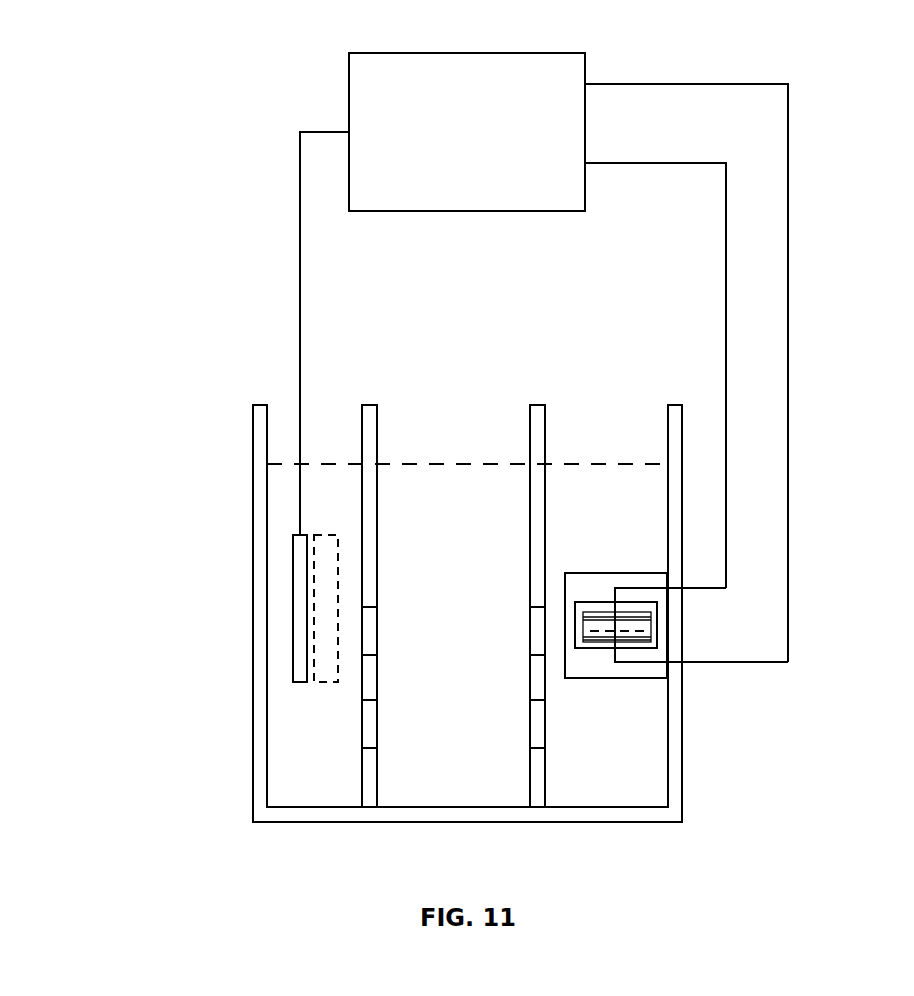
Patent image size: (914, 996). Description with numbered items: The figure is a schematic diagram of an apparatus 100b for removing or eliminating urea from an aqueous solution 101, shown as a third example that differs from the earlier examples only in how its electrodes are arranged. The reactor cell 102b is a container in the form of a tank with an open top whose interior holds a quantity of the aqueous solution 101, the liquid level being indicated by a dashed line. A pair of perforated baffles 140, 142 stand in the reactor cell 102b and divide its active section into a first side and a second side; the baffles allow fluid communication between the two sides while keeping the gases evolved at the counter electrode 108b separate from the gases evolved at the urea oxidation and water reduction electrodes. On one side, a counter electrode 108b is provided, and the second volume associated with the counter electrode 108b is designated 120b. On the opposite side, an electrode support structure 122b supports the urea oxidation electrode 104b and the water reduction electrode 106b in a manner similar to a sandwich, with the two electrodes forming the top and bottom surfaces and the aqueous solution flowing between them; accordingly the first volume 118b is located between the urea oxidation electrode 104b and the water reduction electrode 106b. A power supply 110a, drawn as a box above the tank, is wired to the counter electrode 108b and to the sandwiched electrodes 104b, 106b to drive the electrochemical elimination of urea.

The apparatus 100b is at (226, 151).
The power supply 110a is at (522, 70).
The reactor cell 102b is at (673, 773).
The perforated baffle 142 is at (372, 408).
The perforated baffle 140 is at (533, 408).
The aqueous solution 101 is at (493, 463).
The counter electrode 108b is at (298, 612).
The second volume 120b is at (328, 682).
The electrode support structure 122b is at (575, 672).
The urea oxidation electrode 104b is at (648, 646).
The water reduction electrode 106b is at (600, 606).
The first volume 118b is at (630, 630).